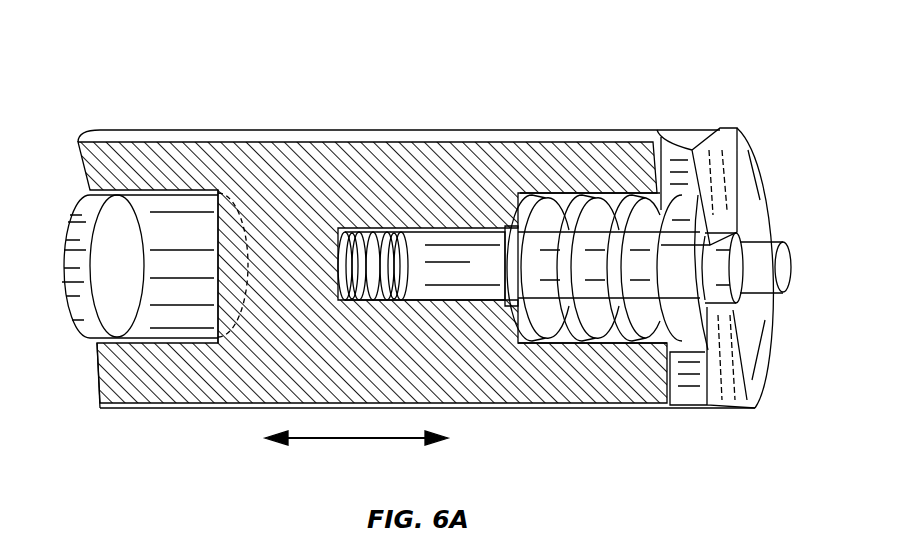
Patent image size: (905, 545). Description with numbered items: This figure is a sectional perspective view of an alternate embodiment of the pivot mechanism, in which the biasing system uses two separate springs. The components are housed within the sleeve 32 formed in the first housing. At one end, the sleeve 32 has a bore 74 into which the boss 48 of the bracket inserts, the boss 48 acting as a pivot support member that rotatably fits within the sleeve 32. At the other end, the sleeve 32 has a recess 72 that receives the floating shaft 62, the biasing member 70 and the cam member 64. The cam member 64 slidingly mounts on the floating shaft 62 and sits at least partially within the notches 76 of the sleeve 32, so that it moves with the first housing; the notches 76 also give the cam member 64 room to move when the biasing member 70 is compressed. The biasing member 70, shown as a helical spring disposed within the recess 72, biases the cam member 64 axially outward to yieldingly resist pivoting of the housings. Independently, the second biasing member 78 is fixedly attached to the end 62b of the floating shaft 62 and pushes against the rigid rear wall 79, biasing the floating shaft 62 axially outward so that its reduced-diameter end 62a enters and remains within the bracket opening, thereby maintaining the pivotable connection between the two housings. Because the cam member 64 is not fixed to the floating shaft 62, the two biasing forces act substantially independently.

The sleeve 32 is at (491, 131).
The boss 48 is at (79, 234).
The bore 74 is at (190, 227).
The biasing member 78 is at (364, 236).
The rear wall 79 is at (344, 236).
The end of floating shaft 62b is at (397, 236).
The floating shaft 62 is at (455, 277).
The recess 72 is at (607, 203).
The biasing member 70 is at (563, 203).
The cam member 64 is at (688, 136).
The notches 76 is at (662, 142).
The end of floating shaft 62a is at (766, 258).